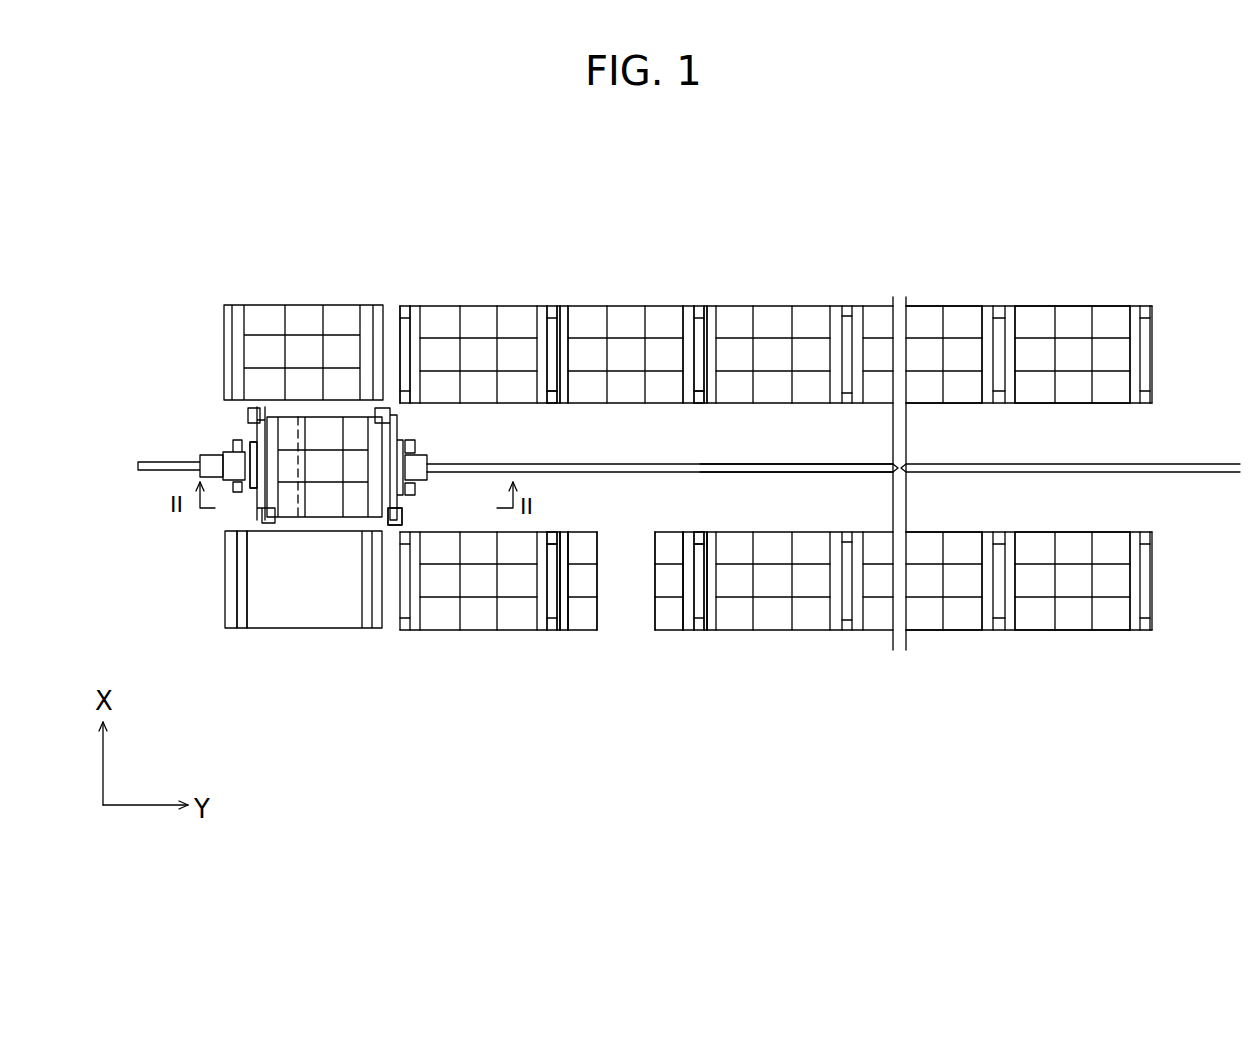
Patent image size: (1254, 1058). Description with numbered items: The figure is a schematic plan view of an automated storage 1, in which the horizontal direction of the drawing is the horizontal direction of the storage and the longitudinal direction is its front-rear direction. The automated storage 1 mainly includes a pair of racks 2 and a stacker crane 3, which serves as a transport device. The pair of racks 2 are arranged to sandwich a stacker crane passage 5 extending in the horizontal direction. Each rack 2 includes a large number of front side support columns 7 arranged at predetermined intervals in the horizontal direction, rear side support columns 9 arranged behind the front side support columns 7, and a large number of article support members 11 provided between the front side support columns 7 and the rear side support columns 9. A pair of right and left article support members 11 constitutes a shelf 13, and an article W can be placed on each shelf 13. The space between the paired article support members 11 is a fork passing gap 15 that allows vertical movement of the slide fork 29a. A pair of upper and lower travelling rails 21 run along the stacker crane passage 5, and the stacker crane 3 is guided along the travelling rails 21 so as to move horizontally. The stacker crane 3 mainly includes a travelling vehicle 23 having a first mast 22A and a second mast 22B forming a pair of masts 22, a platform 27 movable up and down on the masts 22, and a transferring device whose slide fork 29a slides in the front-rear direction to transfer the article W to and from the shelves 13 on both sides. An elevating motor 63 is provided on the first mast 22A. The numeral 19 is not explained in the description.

The automated storage 1 is at (1057, 201).
The rack 2 is at (808, 290).
The stacker crane 3 is at (318, 520).
The stacker crane passage 5 is at (697, 458).
The front side support column 7 is at (553, 405).
The rear side support column 9 is at (400, 308).
The article support member 11 is at (563, 305).
The shelf 13 is at (664, 682).
The fork passing gap 15 is at (625, 555).
The empty pallet station 19 is at (278, 632).
The travelling rail 21 is at (763, 472).
The mast 22 is at (225, 445).
The first mast 22A is at (250, 495).
The second mast 22B is at (427, 465).
The travelling vehicle 23 is at (402, 498).
The platform 27 is at (232, 545).
The slide fork 29a is at (352, 517).
The elevating motor 63 is at (208, 455).
The article W is at (272, 300).